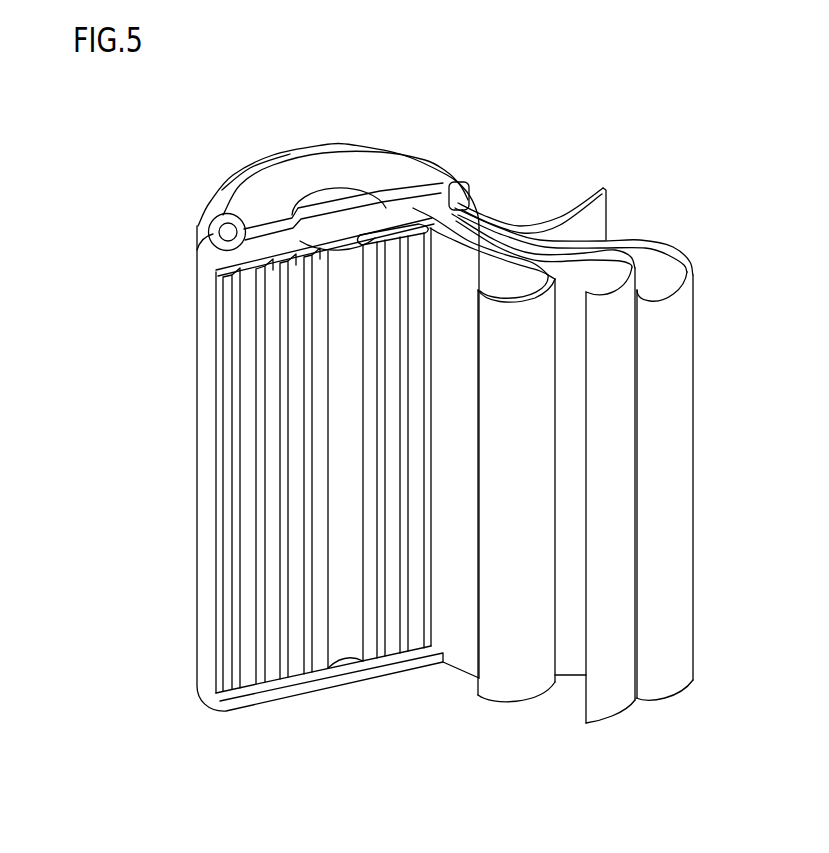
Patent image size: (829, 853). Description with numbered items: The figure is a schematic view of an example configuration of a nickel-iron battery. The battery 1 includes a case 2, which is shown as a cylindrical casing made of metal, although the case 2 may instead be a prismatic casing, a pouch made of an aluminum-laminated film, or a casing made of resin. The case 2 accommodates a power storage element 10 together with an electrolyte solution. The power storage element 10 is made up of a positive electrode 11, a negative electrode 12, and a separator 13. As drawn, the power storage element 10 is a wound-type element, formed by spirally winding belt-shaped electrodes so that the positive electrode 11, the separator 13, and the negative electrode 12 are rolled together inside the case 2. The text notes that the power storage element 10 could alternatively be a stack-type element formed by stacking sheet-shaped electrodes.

The battery 1 is at (527, 130).
The case 2 is at (203, 413).
The power storage element 10 is at (713, 774).
The positive electrode 11 is at (514, 698).
The negative electrode 12 is at (673, 688).
The separator 13 is at (595, 713).